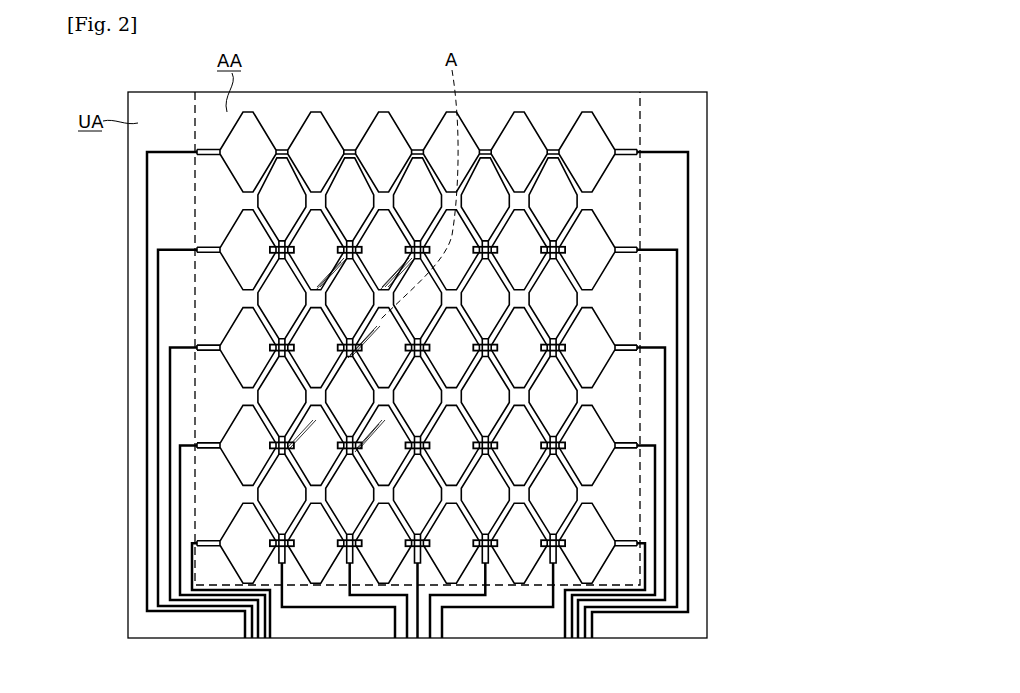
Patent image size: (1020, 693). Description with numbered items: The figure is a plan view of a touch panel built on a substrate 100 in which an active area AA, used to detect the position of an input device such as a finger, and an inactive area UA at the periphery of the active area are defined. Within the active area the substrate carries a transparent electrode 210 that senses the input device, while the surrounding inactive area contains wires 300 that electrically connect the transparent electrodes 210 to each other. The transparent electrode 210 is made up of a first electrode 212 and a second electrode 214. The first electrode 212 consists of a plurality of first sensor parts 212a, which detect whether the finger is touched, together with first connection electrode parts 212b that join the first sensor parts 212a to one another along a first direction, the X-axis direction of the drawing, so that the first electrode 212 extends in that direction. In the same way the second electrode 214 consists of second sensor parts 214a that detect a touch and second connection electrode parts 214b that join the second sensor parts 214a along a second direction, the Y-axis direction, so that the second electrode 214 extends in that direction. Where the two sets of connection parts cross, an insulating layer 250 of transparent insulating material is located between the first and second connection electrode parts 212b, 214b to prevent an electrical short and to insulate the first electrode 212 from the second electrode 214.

The substrate 100 is at (697, 117).
The transparent electrode 210 is at (545, 323).
The first electrode 212 is at (514, 323).
The first sensor parts 212a is at (594, 347).
The first connection electrode parts 212b is at (553, 352).
The second electrode 214 is at (545, 360).
The second sensor parts 214a is at (560, 196).
The second connection electrode parts 214b is at (556, 248).
The insulating layer 250 is at (553, 247).
The wires 300 is at (147, 323).